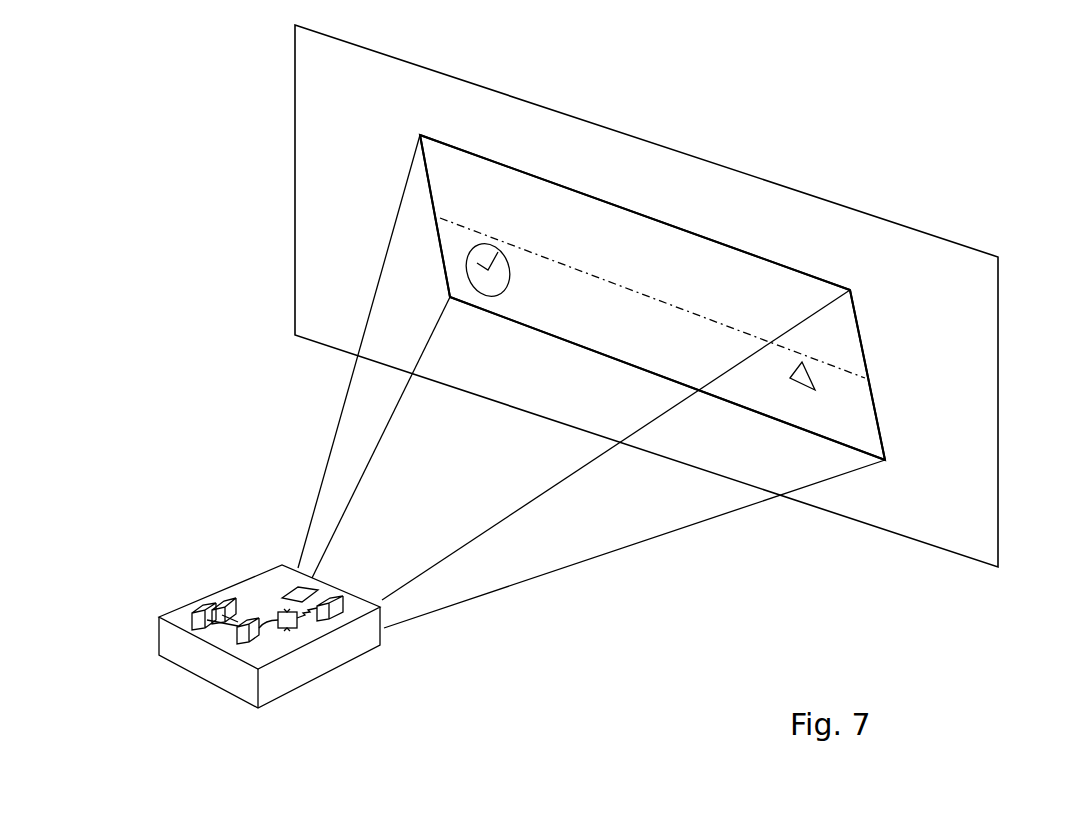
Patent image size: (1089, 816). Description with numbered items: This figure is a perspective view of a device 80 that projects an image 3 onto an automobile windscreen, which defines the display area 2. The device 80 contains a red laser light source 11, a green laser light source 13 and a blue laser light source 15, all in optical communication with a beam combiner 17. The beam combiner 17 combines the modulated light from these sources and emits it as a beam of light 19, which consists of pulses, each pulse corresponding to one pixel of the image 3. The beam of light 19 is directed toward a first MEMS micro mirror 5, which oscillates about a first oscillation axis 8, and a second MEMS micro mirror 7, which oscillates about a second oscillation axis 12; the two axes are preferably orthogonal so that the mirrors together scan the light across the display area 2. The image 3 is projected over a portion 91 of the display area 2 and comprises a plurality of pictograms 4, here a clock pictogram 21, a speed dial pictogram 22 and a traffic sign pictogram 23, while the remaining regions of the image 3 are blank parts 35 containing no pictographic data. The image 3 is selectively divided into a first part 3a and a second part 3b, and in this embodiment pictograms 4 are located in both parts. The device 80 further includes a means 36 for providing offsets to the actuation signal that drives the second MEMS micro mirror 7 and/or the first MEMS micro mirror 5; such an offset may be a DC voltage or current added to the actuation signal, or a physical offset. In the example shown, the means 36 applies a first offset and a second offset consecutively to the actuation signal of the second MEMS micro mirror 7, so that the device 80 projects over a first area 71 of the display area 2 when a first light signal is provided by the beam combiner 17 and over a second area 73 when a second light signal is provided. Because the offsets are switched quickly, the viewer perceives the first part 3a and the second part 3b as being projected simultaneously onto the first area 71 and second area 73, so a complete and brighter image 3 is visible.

The display area 2 is at (985, 273).
The image 3 is at (852, 332).
The first part 3a is at (528, 307).
The second part 3b is at (617, 220).
The pictograms 4 is at (455, 197).
The first MEMS micro mirror 5 is at (303, 622).
The second MEMS micro mirror 7 is at (297, 592).
The first oscillation axis 8 is at (287, 630).
The red laser light source 11 is at (199, 604).
The second oscillation axis 12 is at (332, 582).
The green laser light source 13 is at (197, 597).
The blue laser light source 15 is at (222, 592).
The beam combiner 17 is at (235, 641).
The beam of light 19 is at (263, 630).
The clock pictogram 21 is at (468, 250).
The speed dial pictogram 22 is at (608, 343).
The traffic sign pictogram 23 is at (808, 379).
The blank parts 35 is at (668, 248).
The means for providing offsets 36 is at (365, 607).
The first area 71 is at (857, 307).
The second area 73 is at (760, 396).
The device 80 is at (225, 568).
The portion 91 is at (740, 248).